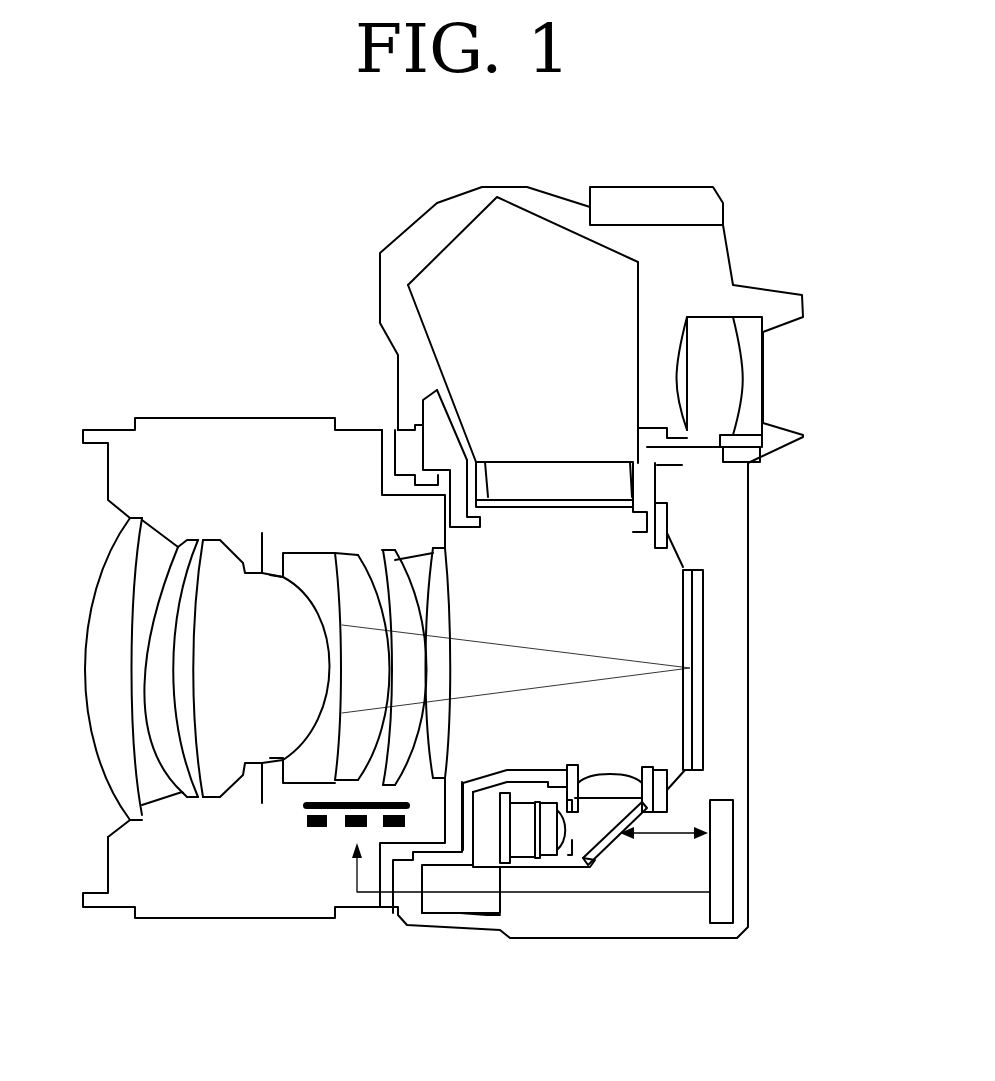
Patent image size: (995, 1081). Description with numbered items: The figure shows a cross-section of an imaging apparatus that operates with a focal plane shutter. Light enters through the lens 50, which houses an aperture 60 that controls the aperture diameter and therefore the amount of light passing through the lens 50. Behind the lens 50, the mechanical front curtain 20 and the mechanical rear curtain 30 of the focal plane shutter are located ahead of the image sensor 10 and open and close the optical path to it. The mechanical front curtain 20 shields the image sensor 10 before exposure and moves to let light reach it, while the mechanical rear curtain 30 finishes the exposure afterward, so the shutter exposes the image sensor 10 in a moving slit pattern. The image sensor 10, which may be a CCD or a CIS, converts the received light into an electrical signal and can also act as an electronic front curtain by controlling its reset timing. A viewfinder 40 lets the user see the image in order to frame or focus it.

The image sensor 10 is at (690, 668).
The mechanical front curtain 20 is at (670, 790).
The mechanical rear curtain 30 is at (674, 519).
The viewfinder 40 is at (770, 370).
The lens 50 is at (273, 418).
The aperture 60 is at (252, 545).